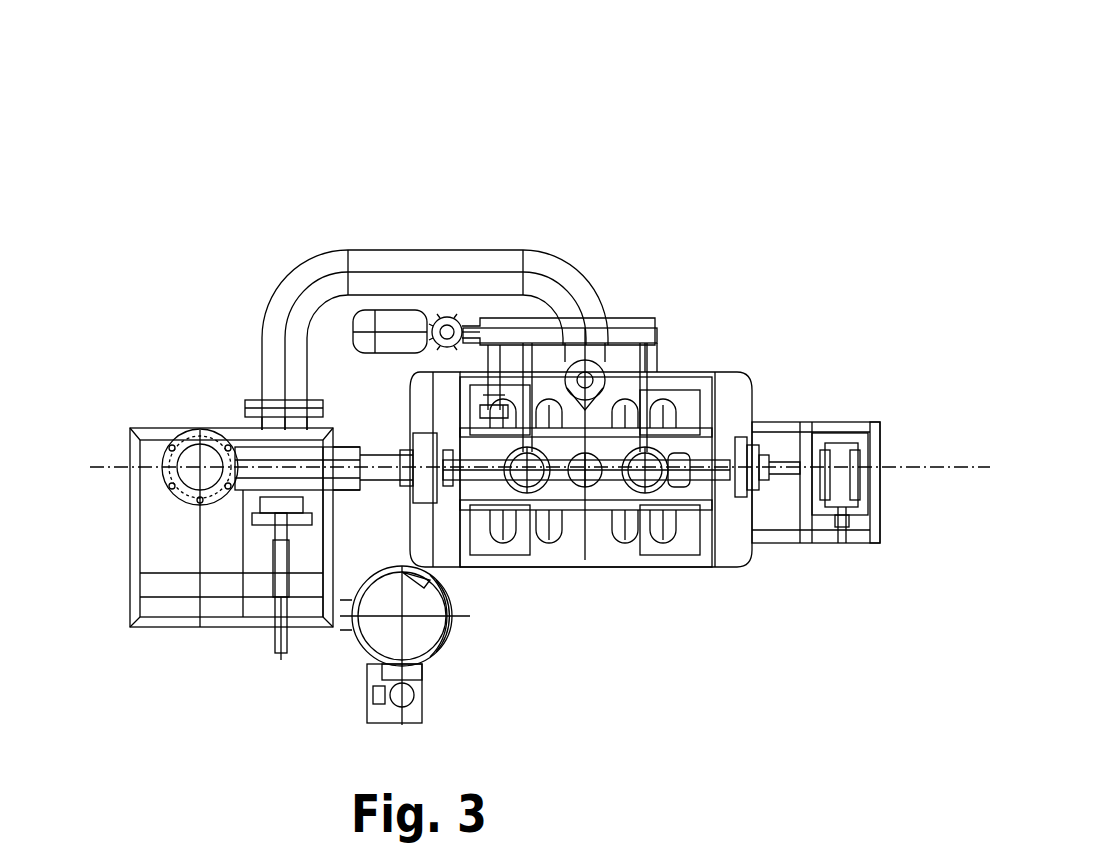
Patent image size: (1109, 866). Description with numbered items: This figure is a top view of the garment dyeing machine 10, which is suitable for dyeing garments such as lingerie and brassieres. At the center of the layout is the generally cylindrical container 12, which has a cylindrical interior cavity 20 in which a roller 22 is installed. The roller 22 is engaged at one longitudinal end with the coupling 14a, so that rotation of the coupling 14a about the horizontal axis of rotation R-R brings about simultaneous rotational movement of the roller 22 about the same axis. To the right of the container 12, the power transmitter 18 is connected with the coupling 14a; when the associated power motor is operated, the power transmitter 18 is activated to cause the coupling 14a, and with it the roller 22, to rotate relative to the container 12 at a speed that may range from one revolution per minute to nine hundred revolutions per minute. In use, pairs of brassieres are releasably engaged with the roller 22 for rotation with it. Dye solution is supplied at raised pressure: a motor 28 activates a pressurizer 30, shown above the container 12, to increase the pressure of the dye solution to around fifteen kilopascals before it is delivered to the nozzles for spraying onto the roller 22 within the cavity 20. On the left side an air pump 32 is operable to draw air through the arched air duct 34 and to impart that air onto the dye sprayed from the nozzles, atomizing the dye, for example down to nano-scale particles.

The garment dyeing machine 10 is at (708, 221).
The container 12 is at (725, 572).
The coupling 14a is at (748, 438).
The power transmitter 18 is at (838, 475).
The interior cavity 20 is at (562, 553).
The roller 22 is at (600, 513).
The motor 28 is at (390, 345).
The pressurizer 30 is at (447, 322).
The air pump 32 is at (205, 455).
The air duct 34 is at (374, 268).